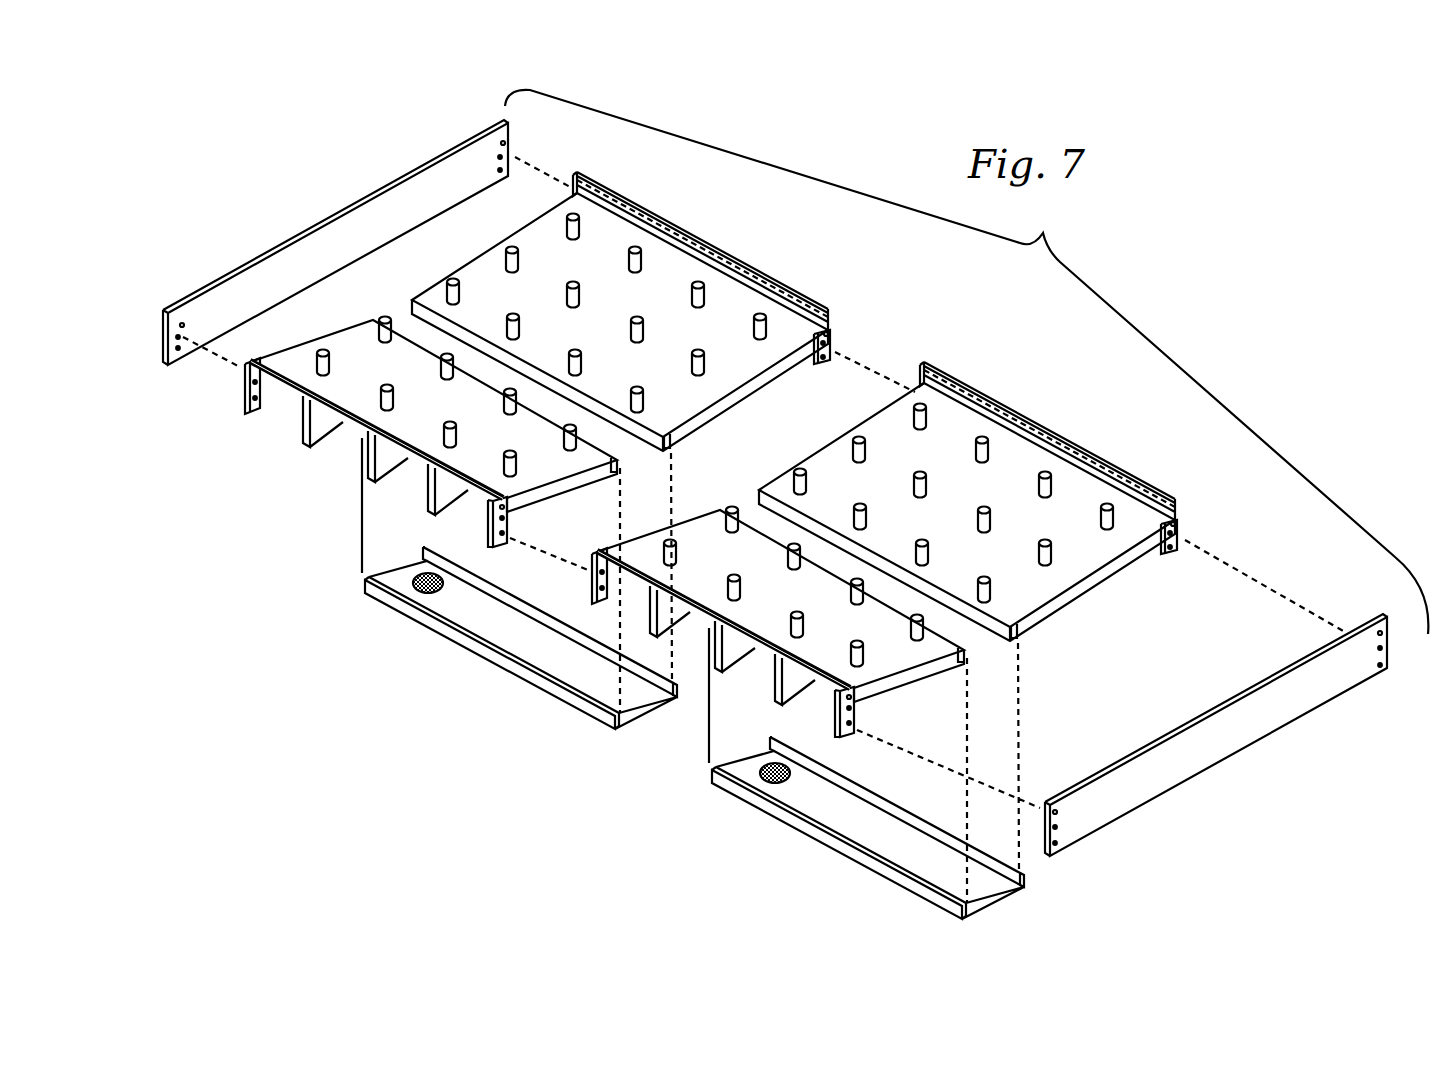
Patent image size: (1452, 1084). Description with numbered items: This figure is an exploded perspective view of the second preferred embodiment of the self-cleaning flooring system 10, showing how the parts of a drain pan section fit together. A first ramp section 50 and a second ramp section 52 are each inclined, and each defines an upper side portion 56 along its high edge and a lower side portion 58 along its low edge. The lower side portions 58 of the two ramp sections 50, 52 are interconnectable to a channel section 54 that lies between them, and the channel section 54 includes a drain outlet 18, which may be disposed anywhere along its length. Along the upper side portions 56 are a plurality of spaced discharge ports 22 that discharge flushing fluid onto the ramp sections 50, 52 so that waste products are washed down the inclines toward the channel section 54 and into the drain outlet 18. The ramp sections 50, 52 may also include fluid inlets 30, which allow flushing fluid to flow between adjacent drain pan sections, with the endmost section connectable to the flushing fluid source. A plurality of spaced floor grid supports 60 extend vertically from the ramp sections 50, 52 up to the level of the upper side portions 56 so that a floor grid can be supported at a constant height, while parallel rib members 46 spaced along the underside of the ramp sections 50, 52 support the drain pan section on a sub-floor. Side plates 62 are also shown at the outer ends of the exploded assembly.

The self-cleaning flooring system 10 is at (966, 362).
The drain outlet 18 is at (759, 781).
The discharge ports 22 is at (1045, 450).
The fluid inlet 30 is at (806, 497).
The rib members 46 is at (427, 497).
The first ramp section 50 is at (897, 665).
The second ramp section 52 is at (477, 650).
The channel section 54 is at (833, 847).
The upper side portions 56 is at (841, 689).
The lower side portions 58 is at (963, 655).
The floor grid supports 60 is at (980, 431).
The side plate 62 is at (1187, 763).